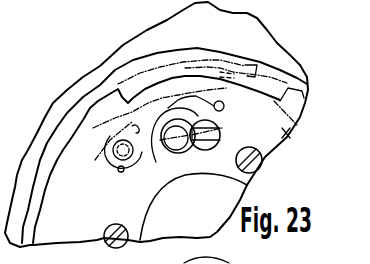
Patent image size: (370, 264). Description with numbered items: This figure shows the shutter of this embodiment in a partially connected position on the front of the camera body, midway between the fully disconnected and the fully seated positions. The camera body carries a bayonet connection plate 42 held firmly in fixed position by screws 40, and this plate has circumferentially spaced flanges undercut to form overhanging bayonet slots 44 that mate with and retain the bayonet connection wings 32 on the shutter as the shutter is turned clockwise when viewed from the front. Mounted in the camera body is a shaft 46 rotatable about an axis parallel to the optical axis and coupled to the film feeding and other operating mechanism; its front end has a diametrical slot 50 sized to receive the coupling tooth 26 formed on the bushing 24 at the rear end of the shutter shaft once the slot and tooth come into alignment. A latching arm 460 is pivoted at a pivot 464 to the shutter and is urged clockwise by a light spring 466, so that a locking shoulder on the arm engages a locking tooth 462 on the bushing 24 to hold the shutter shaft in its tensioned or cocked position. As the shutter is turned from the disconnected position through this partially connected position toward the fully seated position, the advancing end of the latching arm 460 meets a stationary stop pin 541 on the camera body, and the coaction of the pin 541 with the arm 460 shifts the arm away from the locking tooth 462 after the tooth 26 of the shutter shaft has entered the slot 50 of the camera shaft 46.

The bayonet connection wings 32 is at (55, 243).
The latching arm 460 is at (150, 116).
The bayonet slots 44 is at (255, 65).
The bayonet connection plate 42 is at (287, 136).
The stop pin 541 is at (224, 106).
The shaft 46 is at (207, 149).
The coupling tooth 26 is at (180, 114).
The diametrical slot 50 is at (217, 135).
The screws 40 is at (251, 147).
The bushing 24 is at (187, 181).
The pivot 464 is at (116, 158).
The light spring 466 is at (116, 183).
The locking tooth 462 is at (124, 169).